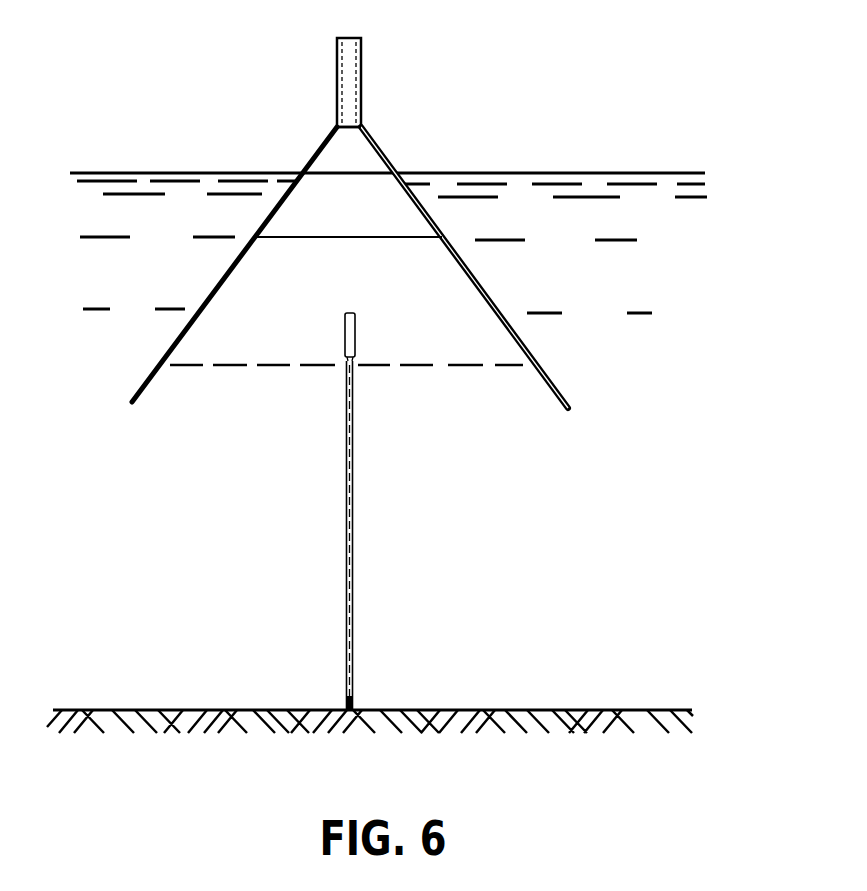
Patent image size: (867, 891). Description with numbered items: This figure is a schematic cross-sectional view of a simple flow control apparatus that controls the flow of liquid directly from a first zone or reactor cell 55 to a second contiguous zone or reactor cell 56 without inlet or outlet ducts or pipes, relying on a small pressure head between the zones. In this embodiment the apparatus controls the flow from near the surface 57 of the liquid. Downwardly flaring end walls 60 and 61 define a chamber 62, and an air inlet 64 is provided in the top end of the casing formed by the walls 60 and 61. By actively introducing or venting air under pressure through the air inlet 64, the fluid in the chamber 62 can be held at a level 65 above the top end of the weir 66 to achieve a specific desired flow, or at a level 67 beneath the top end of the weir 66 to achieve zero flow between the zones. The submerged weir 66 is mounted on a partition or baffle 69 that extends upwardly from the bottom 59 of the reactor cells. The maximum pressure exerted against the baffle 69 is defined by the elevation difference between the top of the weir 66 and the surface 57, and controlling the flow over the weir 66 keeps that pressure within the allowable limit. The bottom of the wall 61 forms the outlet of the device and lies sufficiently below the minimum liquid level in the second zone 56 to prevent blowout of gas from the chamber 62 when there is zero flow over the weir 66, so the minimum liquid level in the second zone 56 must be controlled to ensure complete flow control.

The first zone or reactor cell 55 is at (178, 572).
The second zone or reactor cell 56 is at (548, 579).
The surface 57 is at (215, 173).
The bottom 59 is at (200, 710).
The downwardly flaring end wall 60 is at (212, 306).
The downwardly flaring end wall 61 is at (487, 303).
The chamber 62 is at (372, 162).
The air inlet 64 is at (362, 80).
The level 65 is at (343, 237).
The weir 66 is at (345, 330).
The level 67 is at (467, 370).
The partition or baffle 69 is at (352, 587).